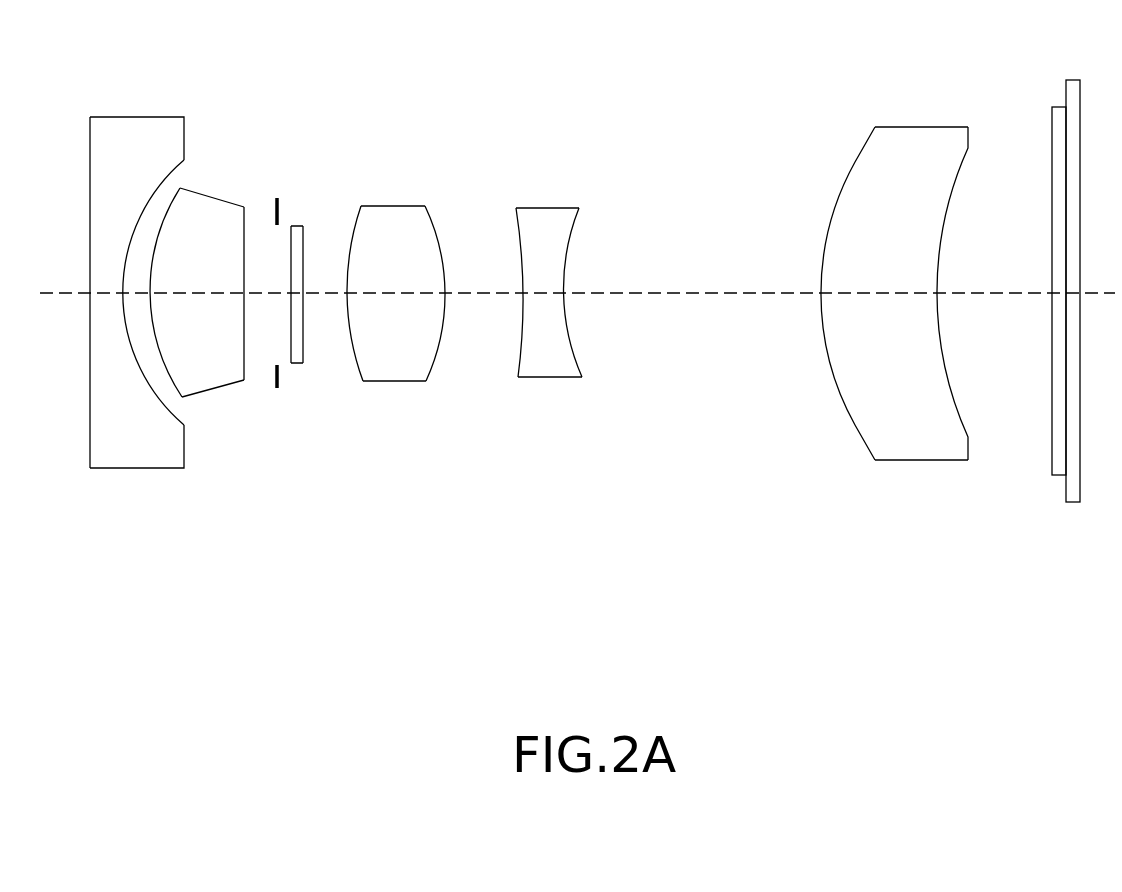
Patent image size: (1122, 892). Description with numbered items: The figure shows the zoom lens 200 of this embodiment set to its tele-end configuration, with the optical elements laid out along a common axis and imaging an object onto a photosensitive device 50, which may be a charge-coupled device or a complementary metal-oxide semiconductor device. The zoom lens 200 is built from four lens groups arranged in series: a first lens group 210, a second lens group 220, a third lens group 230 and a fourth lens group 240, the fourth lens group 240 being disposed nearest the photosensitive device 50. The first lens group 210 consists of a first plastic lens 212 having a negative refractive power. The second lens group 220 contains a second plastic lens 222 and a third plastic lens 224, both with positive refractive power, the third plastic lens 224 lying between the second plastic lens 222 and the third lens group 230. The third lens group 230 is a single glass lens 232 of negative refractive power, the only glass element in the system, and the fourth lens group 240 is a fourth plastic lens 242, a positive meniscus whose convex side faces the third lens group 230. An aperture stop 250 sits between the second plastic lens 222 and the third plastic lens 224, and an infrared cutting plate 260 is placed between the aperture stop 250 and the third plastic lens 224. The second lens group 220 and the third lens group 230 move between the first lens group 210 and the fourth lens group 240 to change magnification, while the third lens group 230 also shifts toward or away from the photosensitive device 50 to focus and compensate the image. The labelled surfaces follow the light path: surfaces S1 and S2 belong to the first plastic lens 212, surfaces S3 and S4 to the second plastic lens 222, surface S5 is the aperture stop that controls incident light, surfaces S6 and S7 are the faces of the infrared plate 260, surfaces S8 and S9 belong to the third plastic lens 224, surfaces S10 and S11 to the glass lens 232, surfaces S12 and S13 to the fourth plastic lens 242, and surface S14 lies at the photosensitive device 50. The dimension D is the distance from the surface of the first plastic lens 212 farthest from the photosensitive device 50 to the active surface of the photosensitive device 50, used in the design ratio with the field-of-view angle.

The zoom lens 200 is at (976, 590).
The first lens group 210 is at (198, 533).
The first plastic lens 212 is at (139, 285).
The second lens group 220 is at (455, 533).
The second plastic lens 222 is at (220, 320).
The third plastic lens 224 is at (433, 320).
The third lens group 230 is at (598, 533).
The glass lens 232 is at (578, 320).
The fourth lens group 240 is at (976, 533).
The fourth plastic lens 242 is at (907, 285).
The aperture stop 250 is at (304, 290).
The infrared cutting plate 260 is at (353, 290).
The photosensitive device 50 is at (1056, 319).
The surface S1 is at (88, 153).
The surface S2 is at (174, 177).
The surface S3 is at (169, 221).
The surface S4 is at (246, 223).
The surface S5 is at (278, 197).
The surface S6 is at (290, 244).
The surface S7 is at (305, 243).
The surface S8 is at (363, 245).
The surface S9 is at (443, 232).
The surface S10 is at (523, 227).
The surface S11 is at (581, 228).
The surface S12 is at (851, 159).
The surface 13 S13 is at (959, 184).
The surface 14 S14 is at (1049, 159).
The distance D is at (1054, 686).